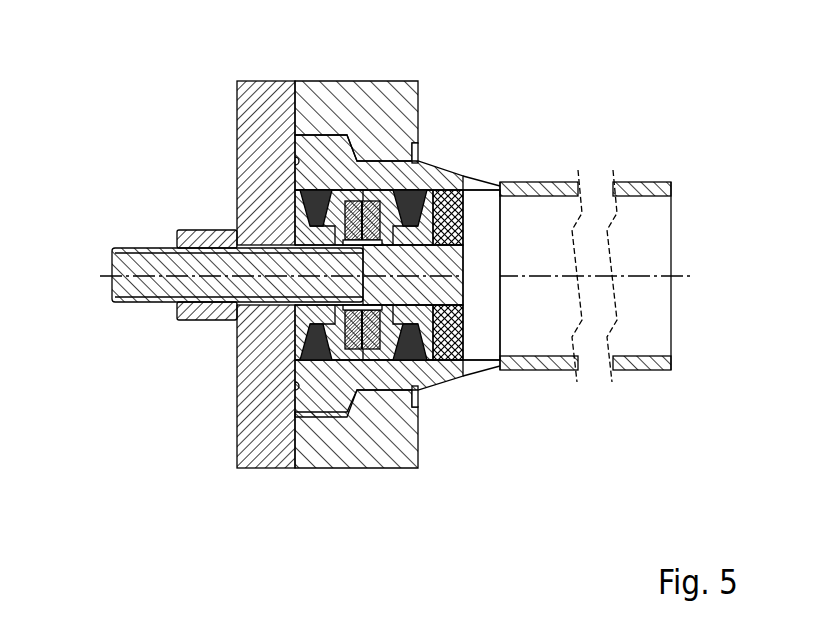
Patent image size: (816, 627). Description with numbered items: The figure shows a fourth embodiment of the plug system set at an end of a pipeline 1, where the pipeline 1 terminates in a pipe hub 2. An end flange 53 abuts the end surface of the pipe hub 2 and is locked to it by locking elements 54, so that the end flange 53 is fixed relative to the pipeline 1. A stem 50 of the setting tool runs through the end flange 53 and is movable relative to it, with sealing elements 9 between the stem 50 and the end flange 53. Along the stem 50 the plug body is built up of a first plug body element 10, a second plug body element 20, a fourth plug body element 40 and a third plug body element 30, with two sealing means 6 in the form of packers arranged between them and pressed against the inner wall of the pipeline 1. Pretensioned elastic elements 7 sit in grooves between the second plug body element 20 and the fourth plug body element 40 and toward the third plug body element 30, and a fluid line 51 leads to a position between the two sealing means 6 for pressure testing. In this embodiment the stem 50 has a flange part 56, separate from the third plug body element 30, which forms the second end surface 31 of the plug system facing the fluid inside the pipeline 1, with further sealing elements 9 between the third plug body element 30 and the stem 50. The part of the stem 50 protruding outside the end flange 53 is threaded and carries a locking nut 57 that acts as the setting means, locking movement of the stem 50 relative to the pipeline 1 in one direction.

The pipeline 1 is at (650, 188).
The pipe hub 2 is at (327, 382).
The sealing means 6 is at (317, 202).
The elastic element 7 is at (362, 340).
The sealing elements 9 is at (425, 318).
The first plug body element 10 is at (302, 228).
The second plug body element 20 is at (343, 198).
The third plug body element 30 is at (450, 218).
The second end surface 31 is at (463, 243).
The fourth plug body element 40 is at (445, 172).
The stem 50 is at (440, 275).
The fluid line 51 is at (116, 249).
The end flange 53 is at (262, 108).
The locking elements 54 is at (333, 105).
The flange part 56 is at (463, 190).
The locking nut 57 is at (200, 232).